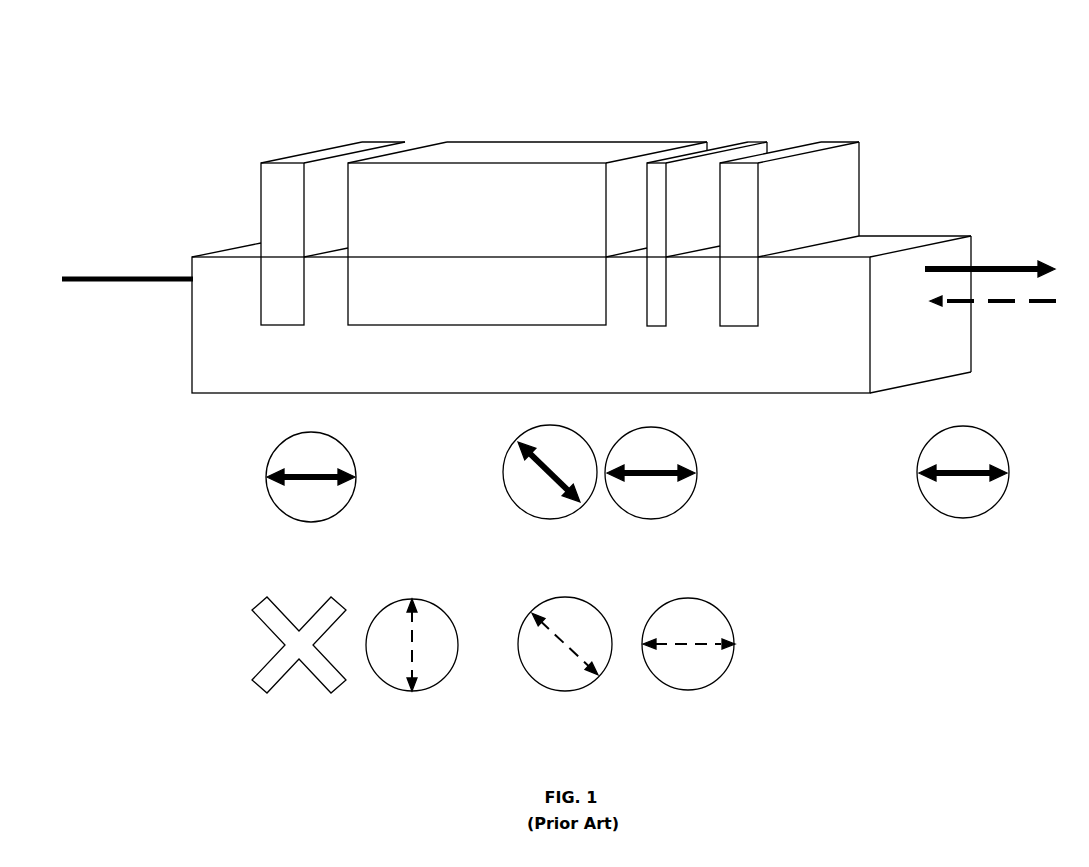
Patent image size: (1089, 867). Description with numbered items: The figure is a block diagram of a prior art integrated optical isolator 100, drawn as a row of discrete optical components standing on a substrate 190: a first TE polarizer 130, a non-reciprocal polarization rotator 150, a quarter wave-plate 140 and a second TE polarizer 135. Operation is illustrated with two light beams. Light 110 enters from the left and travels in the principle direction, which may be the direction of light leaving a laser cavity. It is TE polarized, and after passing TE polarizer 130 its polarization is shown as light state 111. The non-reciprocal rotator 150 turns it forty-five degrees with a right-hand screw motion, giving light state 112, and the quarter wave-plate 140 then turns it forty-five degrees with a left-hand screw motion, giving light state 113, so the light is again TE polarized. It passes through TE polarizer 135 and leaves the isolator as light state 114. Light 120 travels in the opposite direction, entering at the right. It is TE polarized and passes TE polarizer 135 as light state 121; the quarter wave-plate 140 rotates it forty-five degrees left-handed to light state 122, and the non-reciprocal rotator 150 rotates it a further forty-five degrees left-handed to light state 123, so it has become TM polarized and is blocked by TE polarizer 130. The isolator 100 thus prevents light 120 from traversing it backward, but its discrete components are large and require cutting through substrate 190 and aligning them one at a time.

The optical isolator 100 is at (948, 48).
The light 110 is at (122, 275).
The light 120 is at (1010, 302).
The TE polarizer 130 is at (265, 200).
The TE polarizer 135 is at (740, 165).
The quarter wave-plate 140 is at (667, 165).
The non-reciprocal polarization rotator 150 is at (459, 163).
The substrate 190 is at (788, 380).
The light state 111 is at (311, 492).
The light state 112 is at (550, 488).
The light state 113 is at (651, 489).
The light state 114 is at (963, 495).
The light state 121 is at (688, 661).
The light state 122 is at (565, 661).
The light state 123 is at (412, 662).